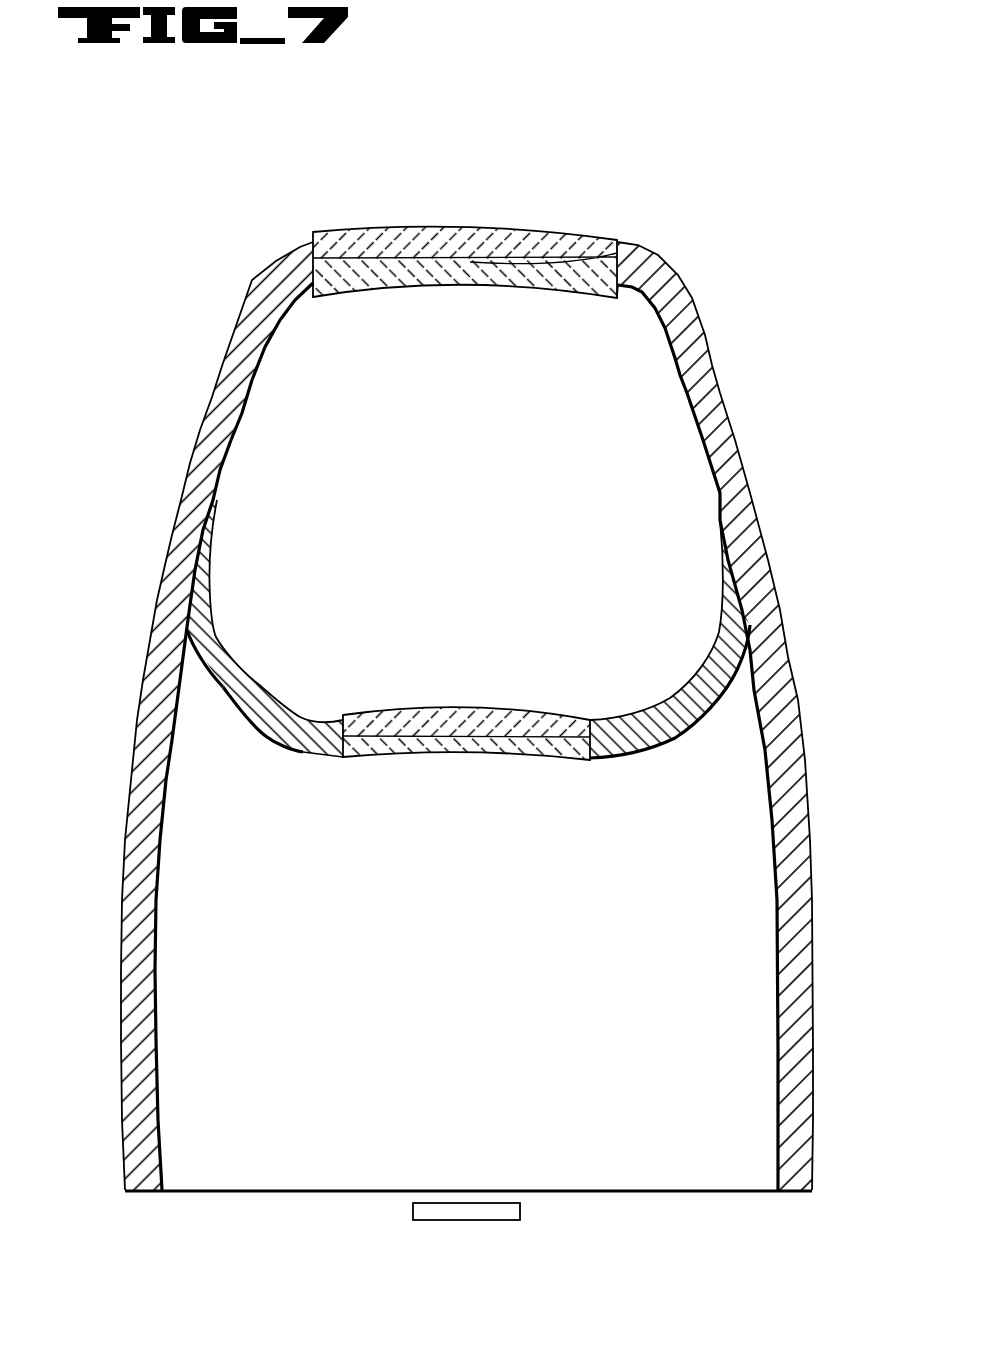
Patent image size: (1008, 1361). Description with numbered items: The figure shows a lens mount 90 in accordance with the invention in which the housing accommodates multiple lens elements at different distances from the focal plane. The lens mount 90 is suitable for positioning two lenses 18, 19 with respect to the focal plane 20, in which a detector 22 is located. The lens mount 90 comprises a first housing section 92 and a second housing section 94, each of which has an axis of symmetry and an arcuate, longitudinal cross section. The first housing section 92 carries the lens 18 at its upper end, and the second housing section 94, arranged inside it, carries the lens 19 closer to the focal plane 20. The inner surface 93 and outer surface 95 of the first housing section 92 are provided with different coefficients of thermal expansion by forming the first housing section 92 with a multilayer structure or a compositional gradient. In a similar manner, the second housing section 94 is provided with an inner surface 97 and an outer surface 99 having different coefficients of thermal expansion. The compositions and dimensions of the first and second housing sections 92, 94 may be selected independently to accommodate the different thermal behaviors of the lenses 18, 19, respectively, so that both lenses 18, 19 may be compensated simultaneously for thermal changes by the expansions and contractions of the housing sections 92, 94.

The lens 18 is at (490, 262).
The lens 19 is at (485, 733).
The focal plane 20 is at (788, 1204).
The detector 22 is at (490, 1221).
The lens mount 90 is at (421, 709).
The first housing section 92 is at (171, 716).
The inner surface 93 is at (157, 1006).
The second housing section 94 is at (312, 738).
The outer surface 95 is at (122, 947).
The inner surface 97 is at (468, 689).
The outer surface 99 is at (236, 720).